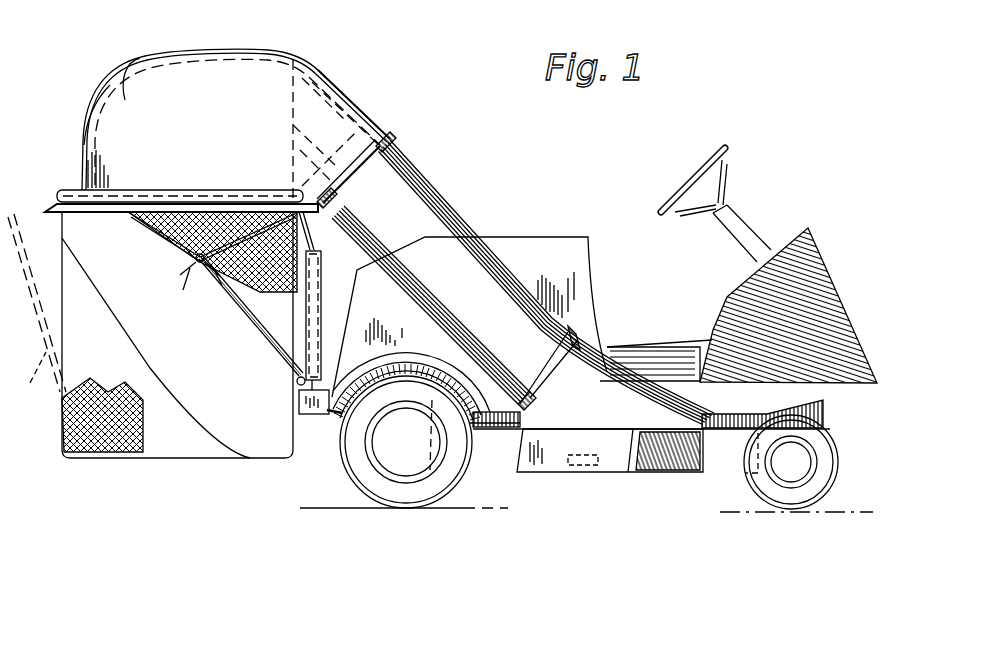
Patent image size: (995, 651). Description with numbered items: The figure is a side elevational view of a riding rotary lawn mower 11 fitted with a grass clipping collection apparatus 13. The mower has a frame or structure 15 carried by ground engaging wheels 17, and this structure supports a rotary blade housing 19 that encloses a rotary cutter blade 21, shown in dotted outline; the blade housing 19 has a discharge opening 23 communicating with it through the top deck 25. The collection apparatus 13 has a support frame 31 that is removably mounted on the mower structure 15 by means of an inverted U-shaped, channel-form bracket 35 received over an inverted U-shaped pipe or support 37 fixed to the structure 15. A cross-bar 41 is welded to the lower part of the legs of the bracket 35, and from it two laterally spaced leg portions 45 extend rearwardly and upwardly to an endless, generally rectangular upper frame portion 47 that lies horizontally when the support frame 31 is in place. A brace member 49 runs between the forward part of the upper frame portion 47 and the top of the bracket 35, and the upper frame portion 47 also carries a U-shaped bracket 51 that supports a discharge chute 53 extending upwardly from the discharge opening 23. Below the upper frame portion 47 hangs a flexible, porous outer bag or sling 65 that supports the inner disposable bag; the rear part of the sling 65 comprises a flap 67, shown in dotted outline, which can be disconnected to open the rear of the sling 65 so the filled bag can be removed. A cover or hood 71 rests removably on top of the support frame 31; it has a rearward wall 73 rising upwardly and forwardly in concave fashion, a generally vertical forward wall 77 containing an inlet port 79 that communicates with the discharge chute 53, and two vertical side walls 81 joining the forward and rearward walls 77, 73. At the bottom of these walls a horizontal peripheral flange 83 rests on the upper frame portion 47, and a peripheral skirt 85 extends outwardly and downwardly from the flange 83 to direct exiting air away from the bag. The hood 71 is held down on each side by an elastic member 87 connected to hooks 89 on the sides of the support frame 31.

The riding rotary lawn mower 11 is at (686, 293).
The grass clipping collection apparatus 13 is at (218, 346).
The frame or structure 15 is at (863, 343).
The ground engaging wheels 17 is at (370, 480).
The rotary blade housing 19 is at (663, 440).
The rotary cutter blade 21 is at (583, 465).
The discharge opening 23 is at (555, 338).
The top deck 25 is at (576, 425).
The support frame 31 is at (270, 362).
The bracket 35 is at (330, 298).
The pipe or support 37 is at (306, 384).
The cross-bar 41 is at (295, 381).
The leg portions 45 is at (240, 308).
The upper frame portion 47 is at (143, 202).
The brace member 49 is at (313, 245).
The U-shaped bracket 51 is at (367, 123).
The discharge chute 53 is at (423, 203).
The outer bag or sling 65 is at (88, 455).
The flap 67 is at (29, 378).
The cover or hood 71 is at (175, 88).
The rearward wall 73 is at (93, 107).
The forward wall 77 is at (321, 68).
The inlet port 79 is at (323, 92).
The side walls 81 is at (125, 100).
The peripheral flange 83 is at (72, 190).
The peripheral skirt 85 is at (37, 303).
The elastic member 87 is at (165, 250).
The hooks 89 is at (197, 270).